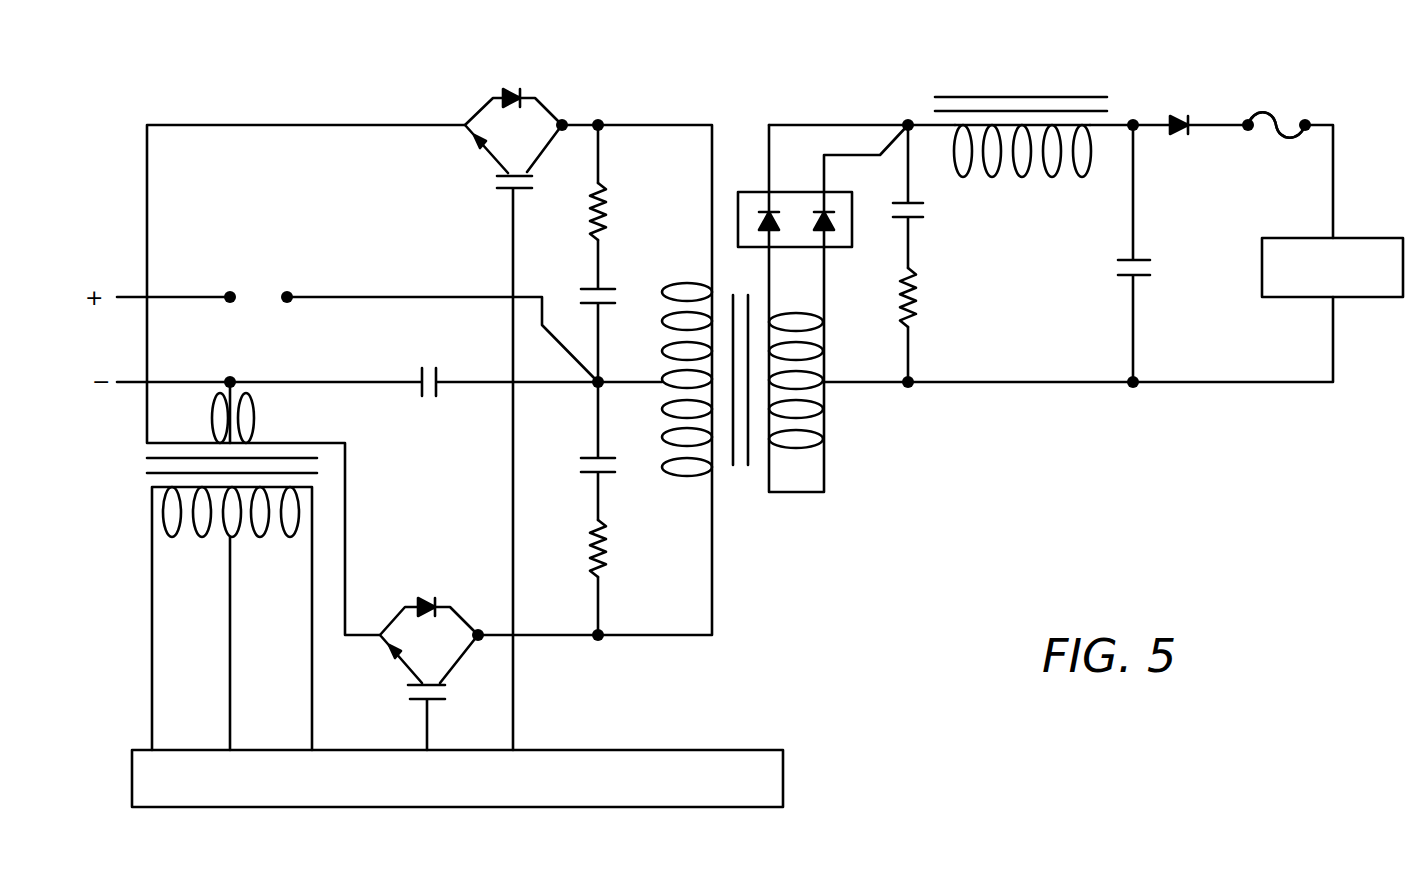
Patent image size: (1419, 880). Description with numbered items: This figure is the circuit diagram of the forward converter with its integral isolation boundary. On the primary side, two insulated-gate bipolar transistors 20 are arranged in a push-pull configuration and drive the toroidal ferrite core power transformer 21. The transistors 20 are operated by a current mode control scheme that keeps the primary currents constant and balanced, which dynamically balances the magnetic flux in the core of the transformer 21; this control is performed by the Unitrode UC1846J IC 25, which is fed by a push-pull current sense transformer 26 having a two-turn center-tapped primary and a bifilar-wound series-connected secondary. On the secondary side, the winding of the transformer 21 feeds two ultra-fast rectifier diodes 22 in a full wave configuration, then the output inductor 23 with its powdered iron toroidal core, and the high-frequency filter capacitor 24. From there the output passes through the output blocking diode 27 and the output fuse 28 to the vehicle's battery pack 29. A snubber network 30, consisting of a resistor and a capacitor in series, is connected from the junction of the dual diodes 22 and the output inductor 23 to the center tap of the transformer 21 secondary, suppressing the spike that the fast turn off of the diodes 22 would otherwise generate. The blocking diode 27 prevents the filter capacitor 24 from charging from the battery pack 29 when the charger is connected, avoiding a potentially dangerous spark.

The insulated-gate bipolar transistors 20 is at (503, 155).
The ferrite core transformer 21 is at (740, 475).
The rectifier diodes 22 is at (836, 247).
The output inductor 23 is at (1022, 97).
The high-frequency filter capacitor 24 is at (1143, 275).
The current mode control IC 25 is at (740, 750).
The push-pull current sense transformer 26 is at (145, 466).
The output blocking diode 27 is at (1180, 120).
The output fuse 28 is at (1278, 122).
The battery pack 29 is at (1297, 238).
The snubber network 30 is at (934, 295).